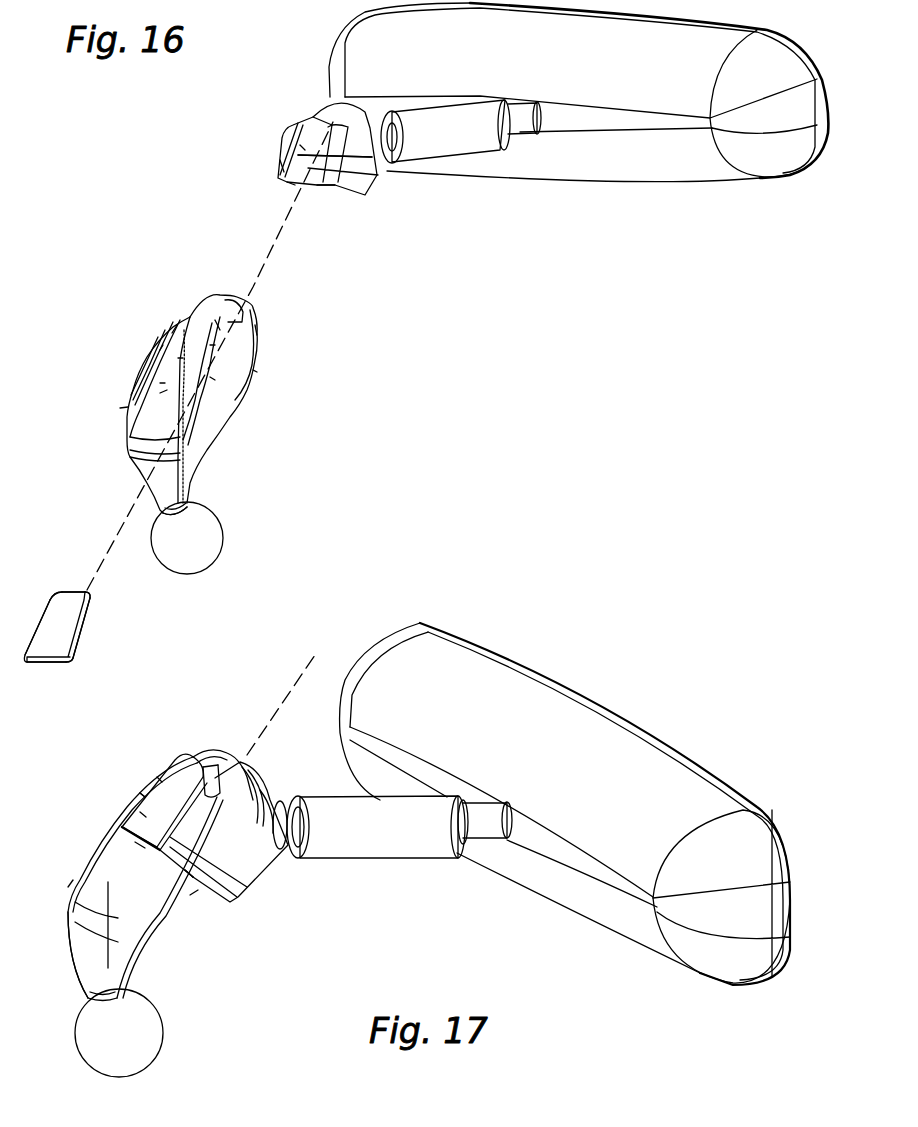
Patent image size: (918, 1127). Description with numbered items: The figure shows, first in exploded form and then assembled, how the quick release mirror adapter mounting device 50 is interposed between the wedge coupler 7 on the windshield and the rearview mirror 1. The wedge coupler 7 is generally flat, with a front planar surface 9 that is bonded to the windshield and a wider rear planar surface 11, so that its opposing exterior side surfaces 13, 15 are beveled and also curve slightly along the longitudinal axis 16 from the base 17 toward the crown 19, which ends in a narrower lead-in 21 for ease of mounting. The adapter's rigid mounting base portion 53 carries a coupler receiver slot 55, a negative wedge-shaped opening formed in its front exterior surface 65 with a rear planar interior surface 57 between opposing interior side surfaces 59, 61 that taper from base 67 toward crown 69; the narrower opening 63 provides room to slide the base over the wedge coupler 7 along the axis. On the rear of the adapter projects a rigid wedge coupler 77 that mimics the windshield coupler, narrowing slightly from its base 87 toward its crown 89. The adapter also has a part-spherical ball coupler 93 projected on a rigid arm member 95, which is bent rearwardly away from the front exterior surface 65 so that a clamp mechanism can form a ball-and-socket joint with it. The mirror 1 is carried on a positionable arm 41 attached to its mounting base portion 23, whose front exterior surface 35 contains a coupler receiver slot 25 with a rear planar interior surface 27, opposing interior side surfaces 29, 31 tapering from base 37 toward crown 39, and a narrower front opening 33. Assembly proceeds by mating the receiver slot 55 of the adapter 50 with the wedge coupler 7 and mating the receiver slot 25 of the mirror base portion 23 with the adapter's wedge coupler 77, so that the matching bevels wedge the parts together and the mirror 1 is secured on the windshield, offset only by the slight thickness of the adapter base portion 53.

In FIG. 16, the rearview mirror 1 is at (578, 92).
In FIG. 17, the rearview mirror 1 is at (565, 804).
In FIG. 16, the wedge coupler 7 is at (36, 632).
In FIG. 17, the wedge coupler 7 is at (140, 812).
In FIG. 16, the front planar surface 9 is at (57, 627).
In FIG. 17, the front planar surface 9 is at (164, 802).
In FIG. 16, the rear planar surface 11 is at (77, 652).
In FIG. 16, the exterior side surface 13 is at (52, 612).
In FIG. 17, the exterior side surface 13 is at (142, 795).
In FIG. 16, the exterior side surface 15 is at (85, 632).
In FIG. 17, the exterior side surface 15 is at (189, 873).
In FIG. 16, the longitudinal axis 16 is at (120, 513).
In FIG. 17, the longitudinal axis 16 is at (287, 695).
In FIG. 16, the base 17 is at (47, 662).
In FIG. 17, the base 17 is at (130, 834).
In FIG. 16, the crown 19 is at (77, 591).
In FIG. 17, the crown 19 is at (203, 766).
In FIG. 16, the lead-in 21 is at (93, 598).
In FIG. 16, the mounting base portion 23 is at (345, 197).
In FIG. 17, the mounting base portion 23 is at (240, 873).
In FIG. 16, the coupler receiver slot 25 is at (302, 148).
In FIG. 17, the coupler receiver slot 25 is at (260, 820).
In FIG. 16, the rear planar interior surface 27 is at (318, 138).
In FIG. 16, the interior side surface 29 is at (335, 173).
In FIG. 16, the interior side surface 31 is at (405, 160).
In FIG. 17, the interior side surface 31 is at (291, 827).
In FIG. 16, the opening 33 is at (319, 189).
In FIG. 17, the opening 33 is at (194, 893).
In FIG. 16, the front exterior surface 35 is at (282, 167).
In FIG. 16, the base 37 is at (290, 185).
In FIG. 16, the crown 39 is at (328, 127).
In FIG. 16, the arm 41 is at (466, 131).
In FIG. 17, the arm 41 is at (406, 827).
In FIG. 16, the quick release mirror adapter mounting device 50 is at (128, 407).
In FIG. 17, the quick release mirror adapter mounting device 50 is at (70, 886).
In FIG. 16, the mounting base portion 53 is at (207, 427).
In FIG. 17, the mounting base portion 53 is at (160, 875).
In FIG. 16, the coupler receiver slot 55 is at (217, 332).
In FIG. 16, the rear planar interior surface 57 is at (180, 358).
In FIG. 16, the interior side surface 59 is at (177, 325).
In FIG. 17, the interior side surface 59 is at (140, 793).
In FIG. 16, the interior side surface 61 is at (210, 345).
In FIG. 17, the interior side surface 61 is at (193, 877).
In FIG. 16, the opening 63 is at (167, 390).
In FIG. 17, the opening 63 is at (140, 845).
In FIG. 16, the front exterior surface 65 is at (163, 345).
In FIG. 17, the front exterior surface 65 is at (157, 777).
In FIG. 16, the base 67 is at (160, 383).
In FIG. 16, the crown 69 is at (227, 305).
In FIG. 17, the crown 69 is at (217, 760).
In FIG. 16, the wedge coupler 77 is at (253, 370).
In FIG. 17, the wedge coupler 77 is at (248, 805).
In FIG. 16, the base 87 is at (212, 378).
In FIG. 16, the crown 89 is at (257, 332).
In FIG. 16, the ball coupler 93 is at (187, 538).
In FIG. 17, the ball coupler 93 is at (119, 1033).
In FIG. 16, the arm member 95 is at (183, 478).
In FIG. 17, the arm member 95 is at (75, 962).